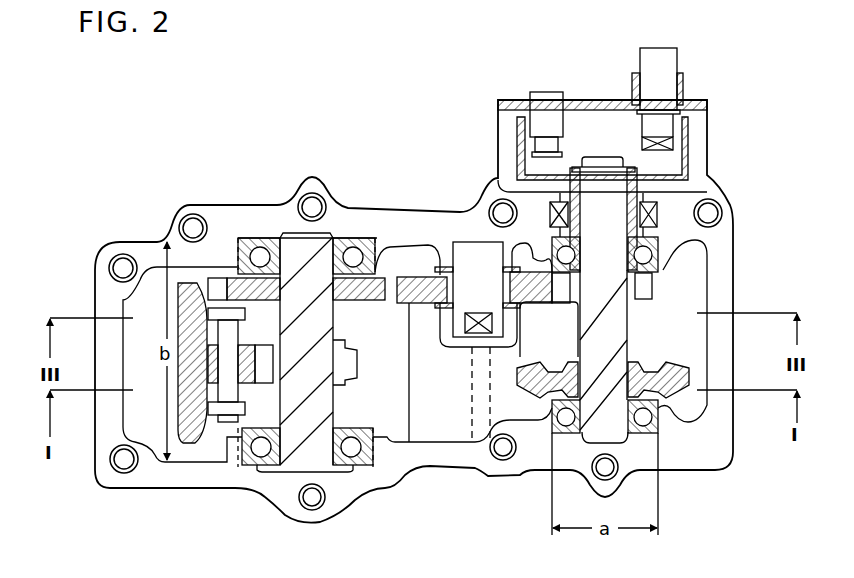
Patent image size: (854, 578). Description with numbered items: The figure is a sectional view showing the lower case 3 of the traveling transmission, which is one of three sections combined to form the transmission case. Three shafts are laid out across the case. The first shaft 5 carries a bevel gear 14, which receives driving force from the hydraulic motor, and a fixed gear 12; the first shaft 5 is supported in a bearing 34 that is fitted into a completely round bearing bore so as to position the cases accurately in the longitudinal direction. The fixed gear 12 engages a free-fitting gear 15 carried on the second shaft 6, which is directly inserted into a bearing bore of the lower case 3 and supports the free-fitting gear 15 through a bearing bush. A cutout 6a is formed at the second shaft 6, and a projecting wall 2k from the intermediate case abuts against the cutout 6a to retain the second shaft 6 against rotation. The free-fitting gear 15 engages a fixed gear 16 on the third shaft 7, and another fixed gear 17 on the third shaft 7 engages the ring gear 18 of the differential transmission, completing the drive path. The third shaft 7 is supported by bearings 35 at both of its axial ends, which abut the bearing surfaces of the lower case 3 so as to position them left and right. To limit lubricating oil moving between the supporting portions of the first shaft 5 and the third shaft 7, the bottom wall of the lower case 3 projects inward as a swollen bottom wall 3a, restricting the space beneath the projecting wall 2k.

The lower case 3 is at (222, 485).
The swollen bottom wall 3a is at (440, 384).
The projecting wall 2k is at (471, 425).
The first shaft 5 is at (620, 328).
The second shaft 6 is at (488, 268).
The cutout 6a is at (492, 328).
The third shaft 7 is at (308, 365).
The fixed gear 12 is at (648, 285).
The bevel gear 14 is at (688, 364).
The free-fitting gear 15 is at (423, 288).
The fixed gear 16 is at (357, 300).
The fixed gear 17 is at (350, 373).
The ring gear 18 is at (255, 368).
The bearing 34 is at (656, 250).
The bearing 35 is at (350, 252).